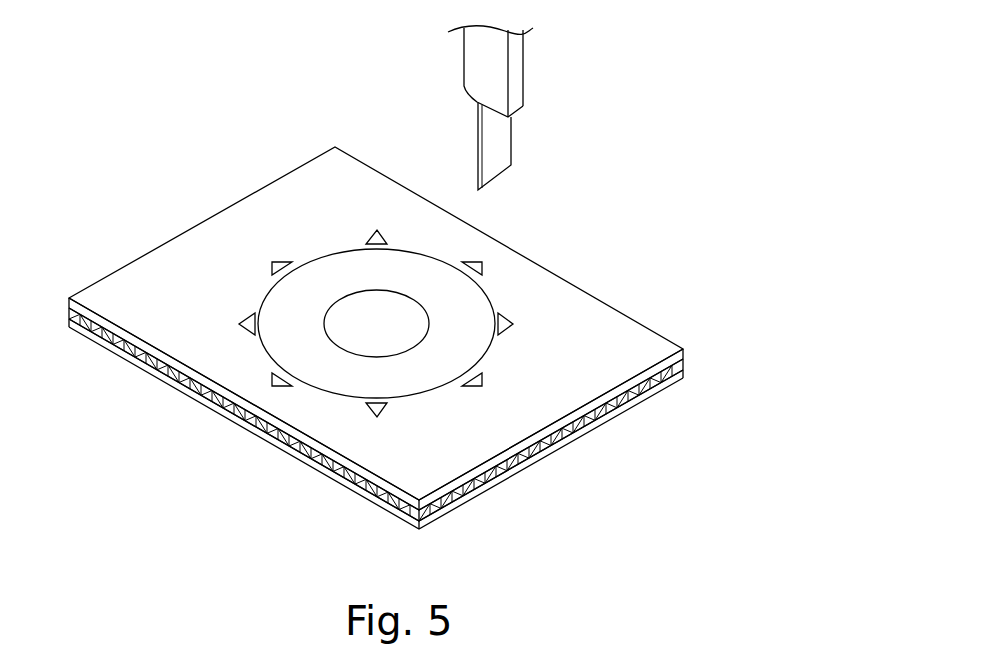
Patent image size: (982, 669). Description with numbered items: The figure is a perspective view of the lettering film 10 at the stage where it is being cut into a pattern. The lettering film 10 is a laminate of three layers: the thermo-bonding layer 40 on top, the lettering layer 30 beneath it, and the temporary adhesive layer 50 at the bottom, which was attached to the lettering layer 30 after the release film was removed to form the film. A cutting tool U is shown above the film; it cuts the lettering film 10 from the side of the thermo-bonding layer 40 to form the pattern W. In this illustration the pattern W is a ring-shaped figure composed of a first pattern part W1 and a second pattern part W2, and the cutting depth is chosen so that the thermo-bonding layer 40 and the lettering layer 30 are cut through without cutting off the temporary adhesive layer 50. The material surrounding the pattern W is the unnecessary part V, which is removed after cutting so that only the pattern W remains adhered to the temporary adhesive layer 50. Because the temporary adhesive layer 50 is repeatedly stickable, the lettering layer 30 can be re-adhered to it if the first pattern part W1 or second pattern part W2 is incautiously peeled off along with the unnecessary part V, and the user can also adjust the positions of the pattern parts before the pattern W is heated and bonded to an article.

The lettering film 10 is at (546, 255).
The thermo-bonding layer 40 is at (625, 312).
The lettering layer 30 is at (688, 358).
The temporary adhesive layer 50 is at (560, 455).
The cutting tool U is at (525, 69).
The pattern W is at (400, 309).
The first pattern part W1 is at (288, 343).
The second pattern part W2 is at (373, 403).
The unnecessary part V is at (383, 312).